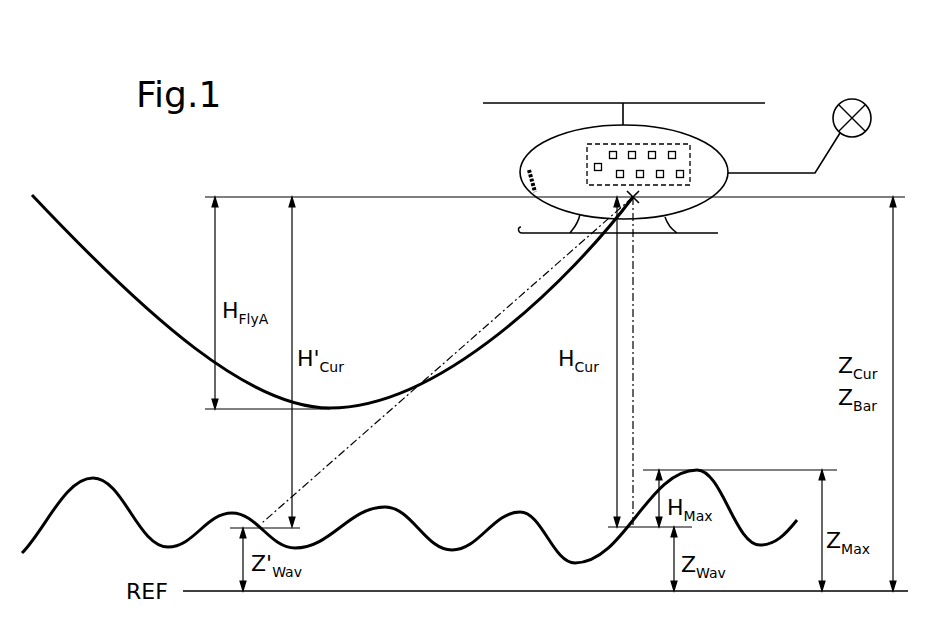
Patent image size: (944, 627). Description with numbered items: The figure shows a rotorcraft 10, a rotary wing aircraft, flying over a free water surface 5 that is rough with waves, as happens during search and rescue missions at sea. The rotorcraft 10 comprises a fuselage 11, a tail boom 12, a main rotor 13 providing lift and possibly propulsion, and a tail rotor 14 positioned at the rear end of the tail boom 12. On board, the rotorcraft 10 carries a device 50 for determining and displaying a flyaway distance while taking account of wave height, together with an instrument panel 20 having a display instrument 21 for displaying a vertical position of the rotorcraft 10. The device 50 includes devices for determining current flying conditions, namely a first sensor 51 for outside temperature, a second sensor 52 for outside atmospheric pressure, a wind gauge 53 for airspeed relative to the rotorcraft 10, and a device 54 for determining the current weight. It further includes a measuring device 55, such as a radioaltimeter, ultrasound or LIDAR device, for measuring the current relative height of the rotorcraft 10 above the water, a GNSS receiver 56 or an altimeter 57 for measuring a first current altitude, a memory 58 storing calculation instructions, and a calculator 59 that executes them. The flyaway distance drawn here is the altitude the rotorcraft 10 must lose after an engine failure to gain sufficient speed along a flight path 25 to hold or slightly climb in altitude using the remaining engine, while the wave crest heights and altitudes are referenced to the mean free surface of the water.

The free water surface 5 is at (105, 488).
The rotorcraft 10 is at (774, 260).
The fuselage 11 is at (716, 235).
The tail boom 12 is at (775, 173).
The main rotor 13 is at (765, 103).
The tail rotor 14 is at (855, 100).
The instrument panel 20 is at (520, 185).
The display instrument 21 is at (537, 167).
The flight path 25 is at (110, 280).
The device for determining and displaying a flyaway distance 50 is at (590, 160).
The first sensor 51 is at (612, 150).
The second sensor 52 is at (633, 150).
The wind gauge 53 is at (652, 150).
The device for determining a current weight 54 is at (672, 150).
The measuring device for current relative height 55 is at (594, 167).
The GNSS receiver 56 is at (617, 175).
The altimeter 57 is at (643, 178).
The memory 58 is at (663, 178).
The calculator 59 is at (684, 174).